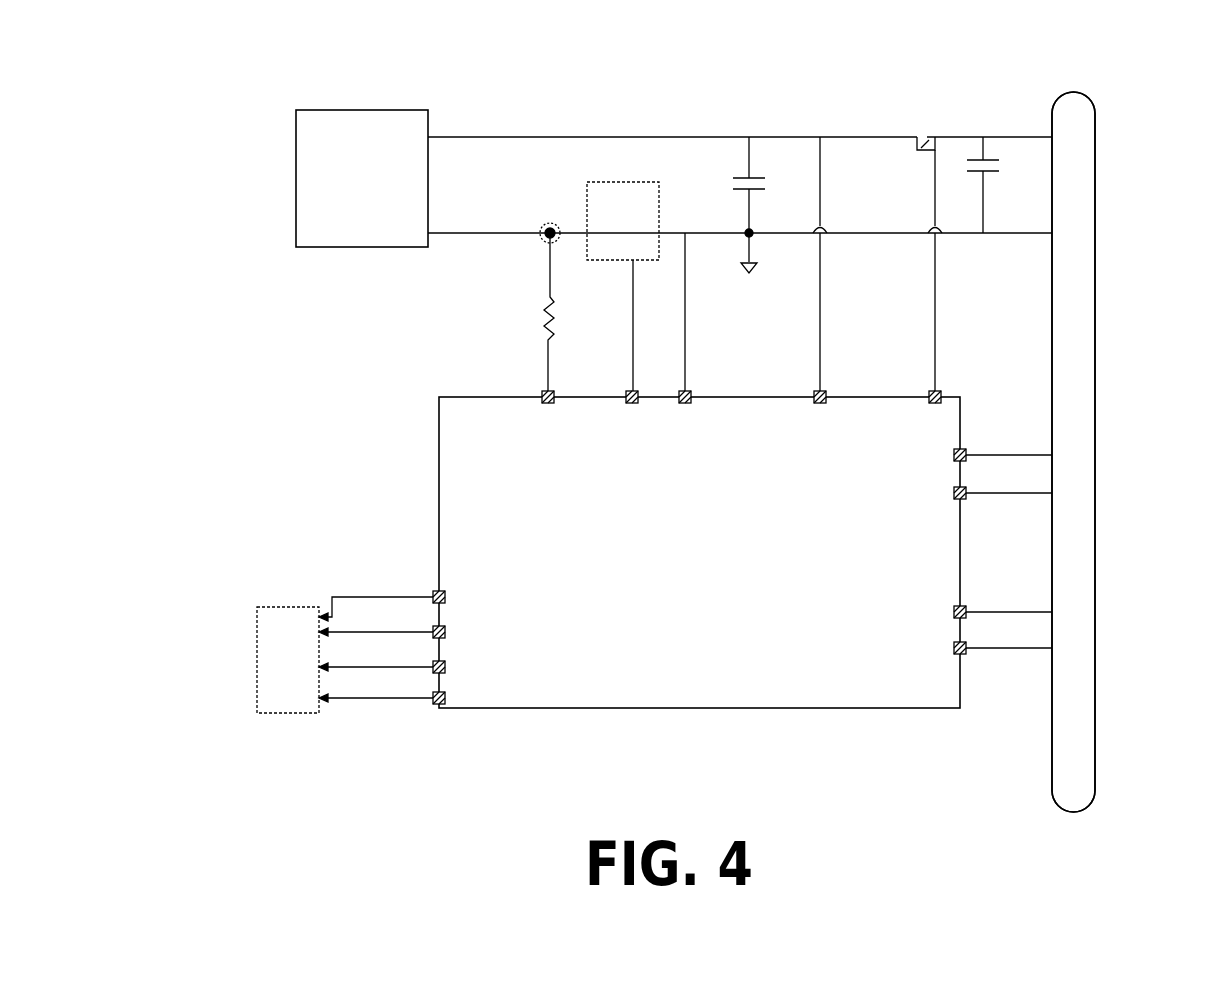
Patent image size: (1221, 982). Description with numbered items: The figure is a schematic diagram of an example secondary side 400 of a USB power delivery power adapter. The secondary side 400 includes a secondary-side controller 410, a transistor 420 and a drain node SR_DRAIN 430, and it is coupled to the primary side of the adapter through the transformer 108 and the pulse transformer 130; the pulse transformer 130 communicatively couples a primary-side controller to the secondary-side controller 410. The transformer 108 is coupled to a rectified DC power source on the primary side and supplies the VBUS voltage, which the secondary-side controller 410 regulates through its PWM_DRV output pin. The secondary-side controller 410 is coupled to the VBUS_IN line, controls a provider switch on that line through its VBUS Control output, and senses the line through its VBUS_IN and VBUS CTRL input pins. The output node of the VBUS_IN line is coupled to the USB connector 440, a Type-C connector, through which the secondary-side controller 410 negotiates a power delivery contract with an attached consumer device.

The secondary side 400 is at (225, 80).
The transformer 108 is at (362, 178).
The transistor 420 is at (623, 286).
The drain node (SR_DRAIN) 430 is at (538, 240).
The secondary-side controller 410 is at (694, 416).
The pulse transformer 130 is at (345, 655).
The USB connector 440 is at (1097, 190).